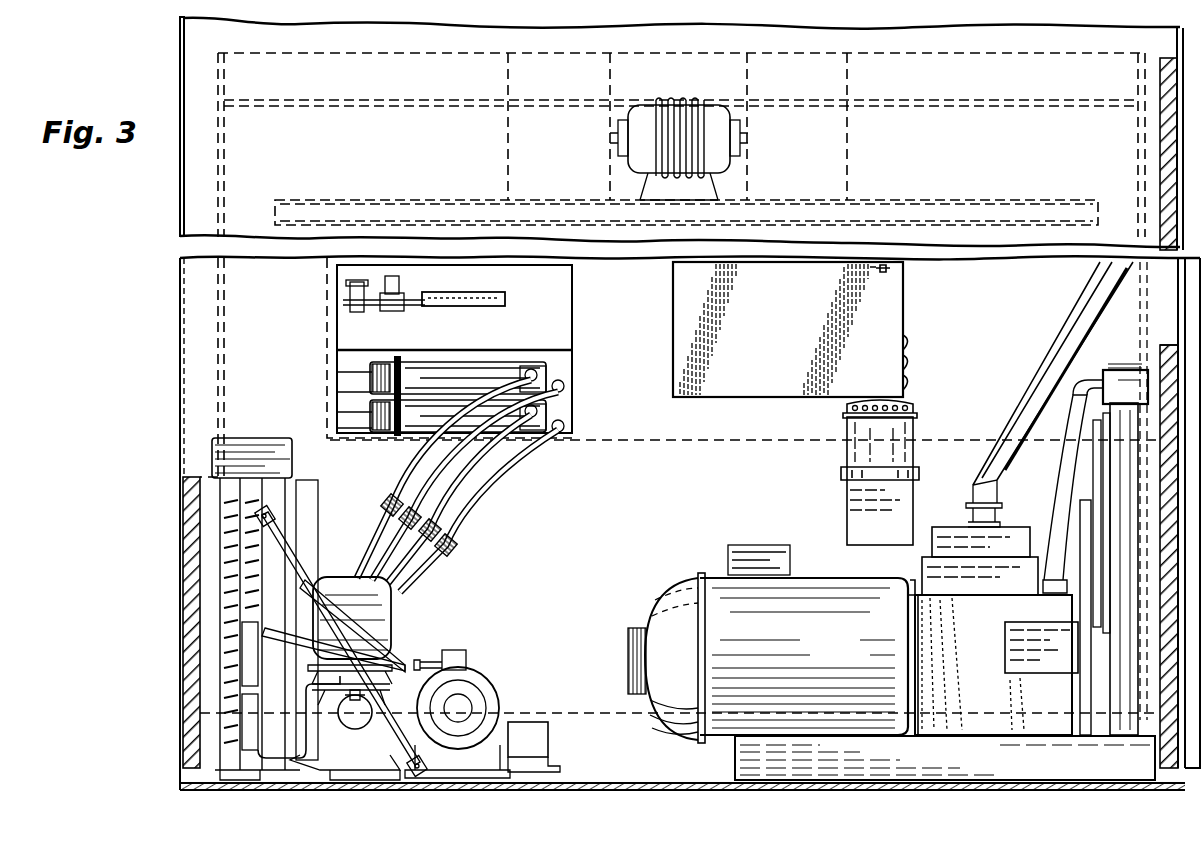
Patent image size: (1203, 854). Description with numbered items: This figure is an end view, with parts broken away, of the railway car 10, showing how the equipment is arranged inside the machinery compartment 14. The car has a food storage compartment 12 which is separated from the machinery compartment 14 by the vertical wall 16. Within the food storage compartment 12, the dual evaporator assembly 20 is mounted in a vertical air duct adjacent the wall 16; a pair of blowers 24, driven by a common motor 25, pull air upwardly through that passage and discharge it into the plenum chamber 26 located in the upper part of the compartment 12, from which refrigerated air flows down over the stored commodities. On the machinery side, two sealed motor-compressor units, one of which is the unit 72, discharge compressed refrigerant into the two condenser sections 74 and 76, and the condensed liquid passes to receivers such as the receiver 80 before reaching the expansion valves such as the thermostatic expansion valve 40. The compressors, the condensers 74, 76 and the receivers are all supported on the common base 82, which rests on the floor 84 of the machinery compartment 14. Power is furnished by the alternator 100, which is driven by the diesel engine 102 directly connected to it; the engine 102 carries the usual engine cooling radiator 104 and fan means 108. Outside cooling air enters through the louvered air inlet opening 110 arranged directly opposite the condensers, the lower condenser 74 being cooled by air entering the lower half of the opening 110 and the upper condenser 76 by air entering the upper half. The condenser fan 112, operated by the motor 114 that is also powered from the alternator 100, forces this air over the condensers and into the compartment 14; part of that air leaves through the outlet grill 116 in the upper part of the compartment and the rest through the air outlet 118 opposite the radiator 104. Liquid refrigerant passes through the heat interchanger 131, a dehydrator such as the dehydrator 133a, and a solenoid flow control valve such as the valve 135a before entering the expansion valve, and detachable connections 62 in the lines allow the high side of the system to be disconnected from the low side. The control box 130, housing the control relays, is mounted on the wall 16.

The railway car 10 is at (180, 280).
The food storage compartment 12 is at (236, 190).
The machinery compartment 14 is at (608, 521).
The vertical wall 16 is at (240, 340).
The dual evaporator assembly 20 is at (770, 442).
The blowers 24 is at (508, 165).
The motor 25 is at (678, 98).
The plenum chamber 26 is at (448, 82).
The thermostatic expansion valve 40 is at (362, 300).
The detachable connections 62 is at (560, 426).
The sealed motor-compressor unit 72 is at (495, 682).
The condenser section 74 is at (268, 668).
The condenser section 76 is at (263, 492).
The receiver 80 is at (355, 727).
The common base 82 is at (522, 745).
The floor 84 is at (600, 782).
The alternator 100 is at (860, 676).
The diesel engine 102 is at (992, 671).
The engine cooling radiator 104 is at (1117, 462).
The fan means 108 is at (1083, 517).
The louvered air inlet opening 110 is at (192, 520).
The condenser fan 112 is at (298, 513).
The motor 114 is at (340, 582).
The outlet grill 116 is at (1166, 162).
The air outlet 118 is at (1165, 740).
The control box 130 is at (868, 297).
The heat interchanger 131 is at (488, 366).
The dehydrator 133a is at (490, 297).
The refrigerant flow control valve 135a is at (398, 305).